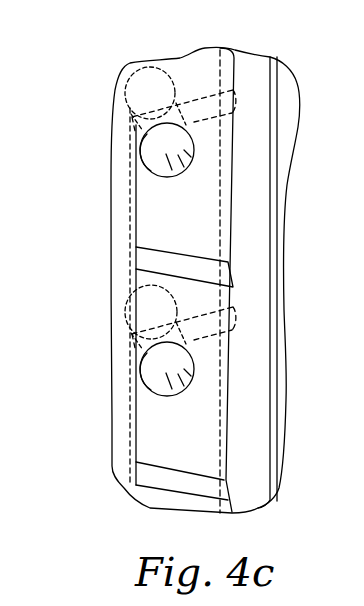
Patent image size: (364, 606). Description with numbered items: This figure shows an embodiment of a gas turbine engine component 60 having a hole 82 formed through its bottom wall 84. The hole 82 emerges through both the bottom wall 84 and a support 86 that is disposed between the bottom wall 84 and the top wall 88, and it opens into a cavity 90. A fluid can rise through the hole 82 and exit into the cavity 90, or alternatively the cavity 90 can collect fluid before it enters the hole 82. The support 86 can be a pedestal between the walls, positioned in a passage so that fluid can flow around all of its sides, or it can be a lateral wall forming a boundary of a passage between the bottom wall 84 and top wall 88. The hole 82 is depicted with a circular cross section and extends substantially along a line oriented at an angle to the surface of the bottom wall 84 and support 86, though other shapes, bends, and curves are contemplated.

The component 60 is at (88, 105).
The hole 82 is at (190, 165).
The bottom wall 84 is at (248, 450).
The support 86 is at (205, 108).
The top wall 88 is at (222, 50).
The cavity 90 is at (168, 211).